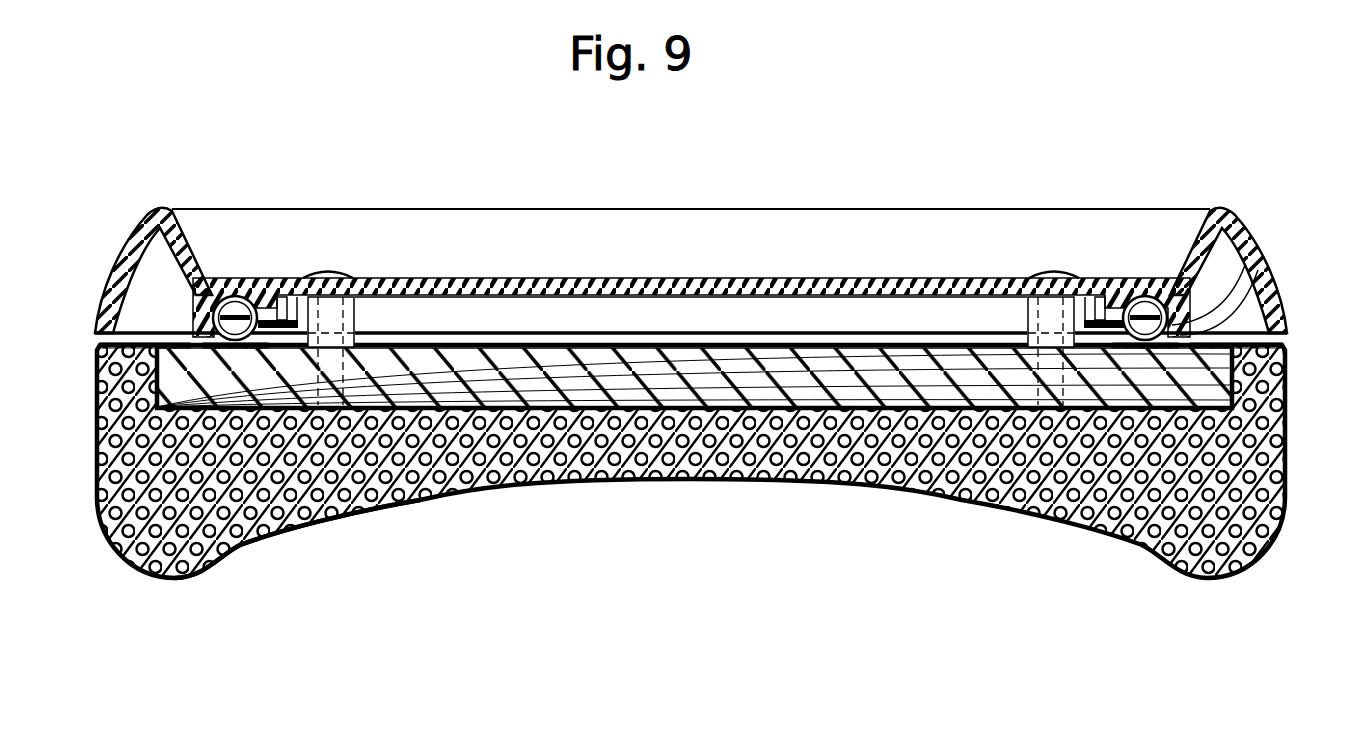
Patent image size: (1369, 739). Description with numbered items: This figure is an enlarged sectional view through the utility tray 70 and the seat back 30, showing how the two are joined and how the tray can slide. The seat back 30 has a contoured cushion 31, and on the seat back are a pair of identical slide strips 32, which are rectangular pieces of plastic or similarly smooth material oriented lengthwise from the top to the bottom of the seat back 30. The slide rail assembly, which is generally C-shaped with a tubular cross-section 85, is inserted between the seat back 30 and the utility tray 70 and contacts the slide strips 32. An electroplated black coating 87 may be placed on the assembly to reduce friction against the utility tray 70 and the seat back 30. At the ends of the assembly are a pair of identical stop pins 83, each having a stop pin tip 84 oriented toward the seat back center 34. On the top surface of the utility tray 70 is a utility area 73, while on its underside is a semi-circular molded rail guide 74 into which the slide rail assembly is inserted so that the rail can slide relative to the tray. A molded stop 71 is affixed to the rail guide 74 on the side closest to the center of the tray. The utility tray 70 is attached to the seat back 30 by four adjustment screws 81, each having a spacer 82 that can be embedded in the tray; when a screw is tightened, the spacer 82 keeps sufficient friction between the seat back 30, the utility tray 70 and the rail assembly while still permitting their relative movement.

The seat back 30 is at (508, 408).
The contoured cushion 31 is at (350, 515).
The slide strips 32 is at (200, 335).
The seat back center 34 is at (592, 347).
The utility tray 70 is at (1231, 210).
The molded stop 71 is at (395, 278).
The utility area 73 is at (703, 278).
The rail guide 74 is at (228, 296).
The adjustment screws 81 is at (326, 273).
The spacer 82 is at (356, 320).
The stop pins 83 is at (258, 296).
The stop pin tip 84 is at (280, 296).
The tubular cross-section 85 is at (1185, 328).
The electroplated black coating 87 is at (1252, 278).